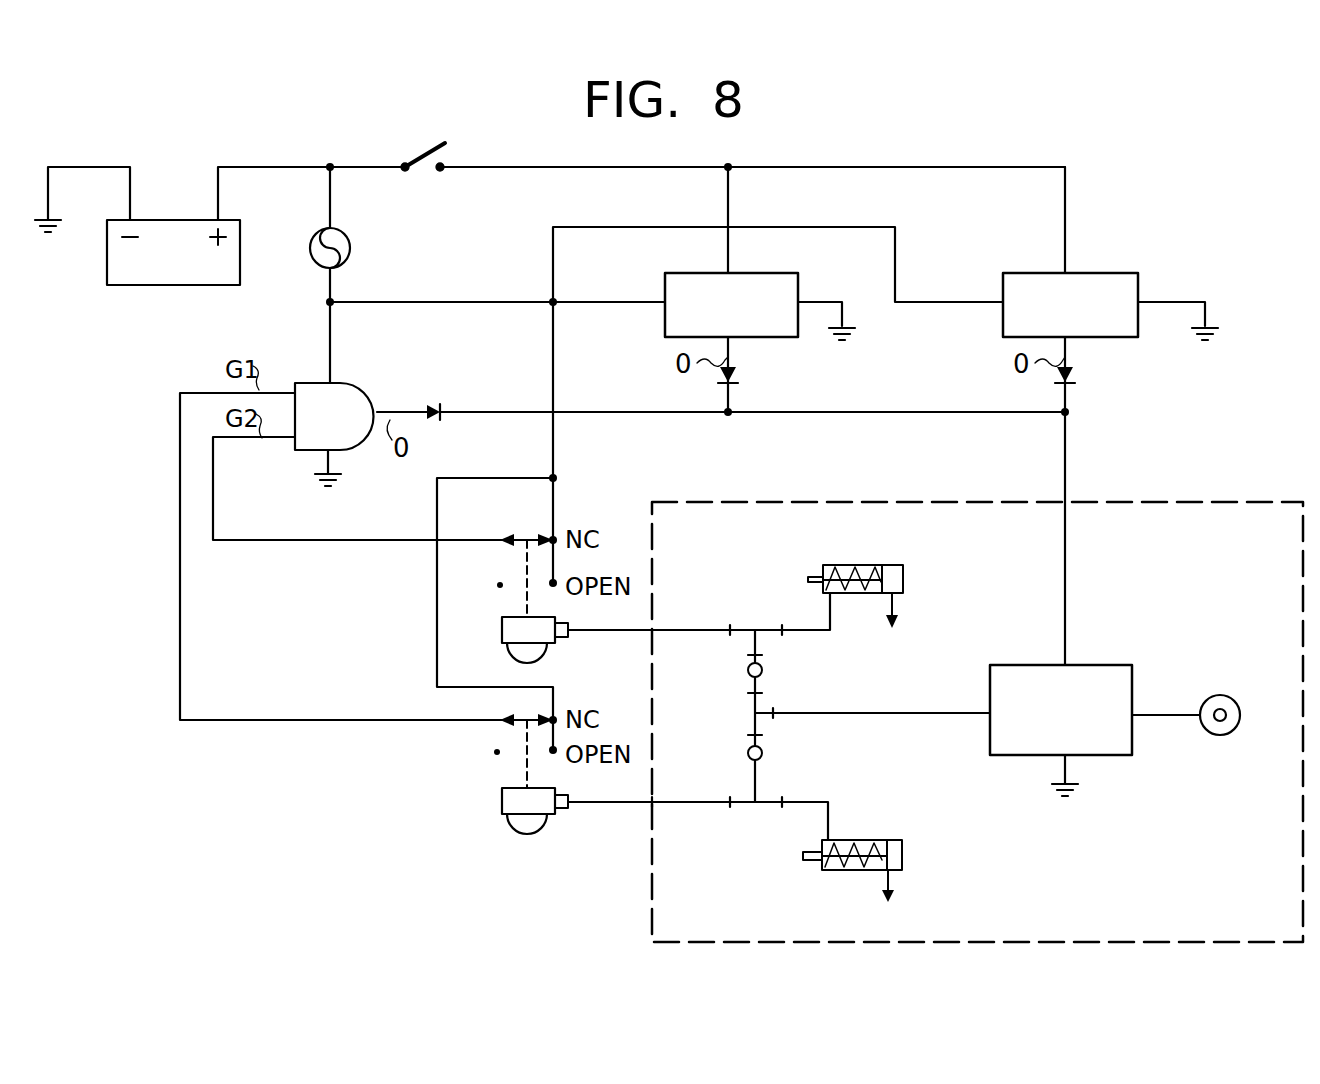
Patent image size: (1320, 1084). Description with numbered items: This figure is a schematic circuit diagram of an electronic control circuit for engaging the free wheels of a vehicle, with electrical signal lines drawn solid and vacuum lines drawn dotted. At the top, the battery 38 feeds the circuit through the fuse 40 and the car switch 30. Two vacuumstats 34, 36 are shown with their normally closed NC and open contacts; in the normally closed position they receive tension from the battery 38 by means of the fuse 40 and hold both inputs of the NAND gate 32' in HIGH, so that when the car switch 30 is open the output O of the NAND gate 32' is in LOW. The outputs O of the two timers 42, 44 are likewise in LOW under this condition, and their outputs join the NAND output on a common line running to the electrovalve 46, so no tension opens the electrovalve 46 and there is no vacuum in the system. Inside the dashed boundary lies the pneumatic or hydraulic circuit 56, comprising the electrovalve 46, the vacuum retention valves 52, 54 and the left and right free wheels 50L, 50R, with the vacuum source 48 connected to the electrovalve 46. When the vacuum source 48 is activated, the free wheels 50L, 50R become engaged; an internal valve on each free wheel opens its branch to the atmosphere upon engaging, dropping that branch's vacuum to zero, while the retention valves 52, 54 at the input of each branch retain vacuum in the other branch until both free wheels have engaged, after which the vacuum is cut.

The car switch 30 is at (464, 140).
The battery 38 is at (190, 268).
The fuse 40 is at (350, 243).
The timer 42 is at (769, 273).
The timer 44 is at (1099, 273).
The NAND gate 32' is at (354, 400).
The vacuumstat 34 is at (502, 620).
The vacuumstat 36 is at (502, 792).
The electrovalve 46 is at (1118, 665).
The vacuum source 48 is at (1227, 697).
The left free wheel 50L is at (841, 565).
The right free wheel 50R is at (852, 840).
The vacuum retention valve 52 is at (763, 670).
The vacuum retention valve 54 is at (763, 753).
The pneumatic or hydraulic circuit 56 is at (786, 500).